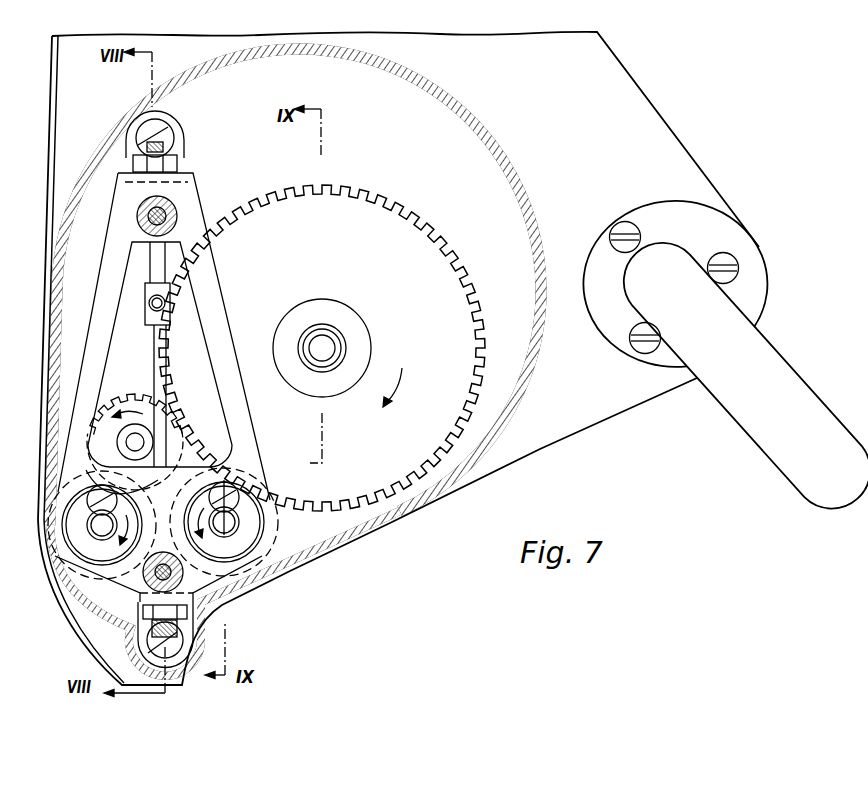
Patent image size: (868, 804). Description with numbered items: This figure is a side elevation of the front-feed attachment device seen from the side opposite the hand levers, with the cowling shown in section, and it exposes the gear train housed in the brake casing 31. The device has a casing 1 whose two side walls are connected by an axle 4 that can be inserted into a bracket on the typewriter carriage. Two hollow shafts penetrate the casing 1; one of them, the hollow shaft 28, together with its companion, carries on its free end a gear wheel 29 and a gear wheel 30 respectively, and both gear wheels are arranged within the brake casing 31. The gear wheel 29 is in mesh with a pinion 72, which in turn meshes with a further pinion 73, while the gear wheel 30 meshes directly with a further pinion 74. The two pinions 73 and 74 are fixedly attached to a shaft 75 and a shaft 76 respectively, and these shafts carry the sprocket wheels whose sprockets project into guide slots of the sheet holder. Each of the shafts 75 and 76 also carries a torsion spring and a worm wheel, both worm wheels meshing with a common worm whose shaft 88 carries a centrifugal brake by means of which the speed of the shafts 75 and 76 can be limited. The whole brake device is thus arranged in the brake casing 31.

The casing 1 is at (538, 441).
The axle 4 is at (794, 393).
The hollow shaft 28 is at (342, 343).
The gear wheel 29 is at (322, 348).
The gear wheel 30 is at (418, 224).
The brake casing 31 is at (506, 152).
The pinion 72 is at (126, 404).
The pinion 73 is at (88, 559).
The pinion 74 is at (233, 556).
The shaft 75 is at (102, 526).
The shaft 76 is at (236, 528).
The shaft of the worm 88 is at (157, 350).